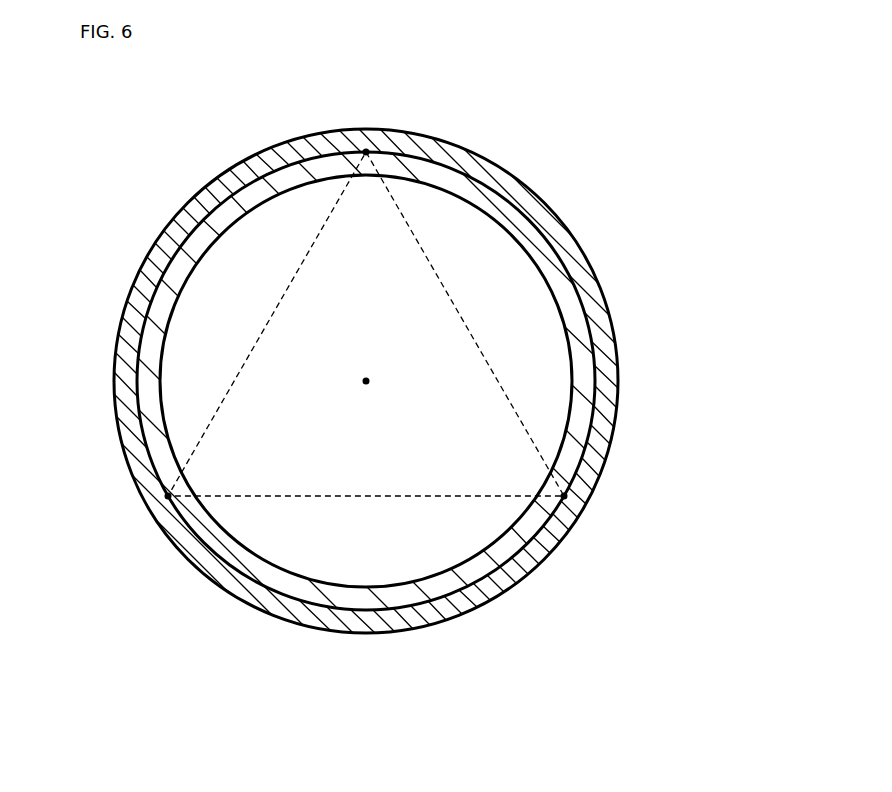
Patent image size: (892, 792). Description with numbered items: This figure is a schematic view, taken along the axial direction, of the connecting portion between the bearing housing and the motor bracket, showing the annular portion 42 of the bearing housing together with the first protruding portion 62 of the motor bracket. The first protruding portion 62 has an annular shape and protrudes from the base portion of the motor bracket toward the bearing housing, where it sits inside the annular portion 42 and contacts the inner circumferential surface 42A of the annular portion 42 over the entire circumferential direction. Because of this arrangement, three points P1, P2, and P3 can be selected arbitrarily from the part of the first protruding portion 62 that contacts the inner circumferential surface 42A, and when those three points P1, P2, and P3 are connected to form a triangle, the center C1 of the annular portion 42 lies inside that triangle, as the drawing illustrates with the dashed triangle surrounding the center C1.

The annular portion 42 is at (592, 284).
The inner circumferential surface 42A is at (587, 320).
The first protruding portion 62 is at (585, 371).
The first point P1 is at (568, 498).
The second point P2 is at (366, 149).
The third point P3 is at (164, 498).
The center C1 is at (366, 386).